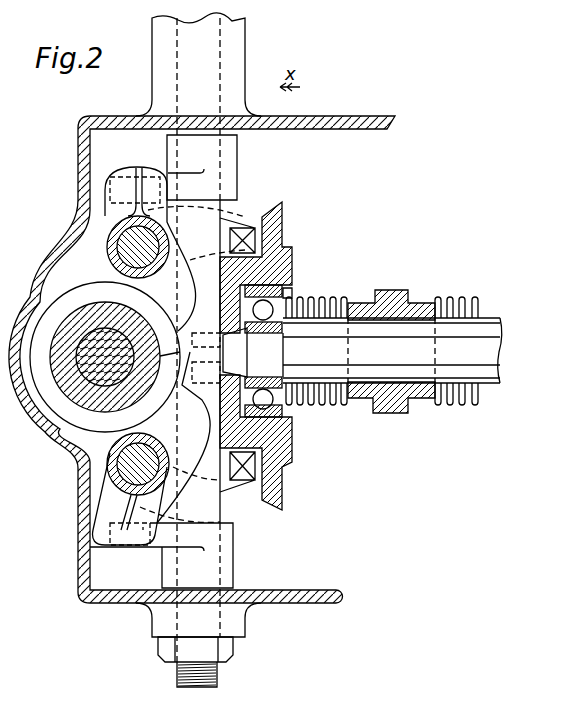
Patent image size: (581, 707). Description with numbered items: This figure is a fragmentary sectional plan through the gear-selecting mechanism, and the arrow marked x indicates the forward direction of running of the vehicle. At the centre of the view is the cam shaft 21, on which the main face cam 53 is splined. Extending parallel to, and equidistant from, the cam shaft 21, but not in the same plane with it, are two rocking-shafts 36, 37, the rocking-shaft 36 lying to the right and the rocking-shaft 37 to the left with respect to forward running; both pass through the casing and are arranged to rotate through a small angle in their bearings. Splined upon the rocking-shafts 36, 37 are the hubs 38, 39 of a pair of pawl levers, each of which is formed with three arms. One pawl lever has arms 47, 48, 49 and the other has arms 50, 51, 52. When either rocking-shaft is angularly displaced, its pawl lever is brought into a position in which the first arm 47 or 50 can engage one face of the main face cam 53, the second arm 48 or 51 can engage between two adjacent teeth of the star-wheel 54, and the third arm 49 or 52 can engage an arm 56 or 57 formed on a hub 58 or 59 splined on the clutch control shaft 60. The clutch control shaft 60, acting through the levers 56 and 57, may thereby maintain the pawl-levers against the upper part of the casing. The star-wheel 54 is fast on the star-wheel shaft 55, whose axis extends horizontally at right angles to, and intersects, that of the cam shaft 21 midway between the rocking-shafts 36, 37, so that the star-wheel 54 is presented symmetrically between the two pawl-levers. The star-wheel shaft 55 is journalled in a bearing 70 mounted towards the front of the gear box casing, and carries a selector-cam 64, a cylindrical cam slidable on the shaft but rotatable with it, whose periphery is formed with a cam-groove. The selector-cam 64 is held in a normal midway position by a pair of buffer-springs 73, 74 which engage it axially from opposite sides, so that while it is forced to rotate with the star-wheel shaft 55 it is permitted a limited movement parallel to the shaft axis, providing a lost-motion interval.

The cam shaft 21 is at (83, 400).
The rocking-shaft 36 is at (130, 250).
The rocking-shaft 37 is at (135, 462).
The hub 38 is at (112, 216).
The hub 39 is at (130, 497).
The pawl-lever arm 47 is at (187, 290).
The pawl-lever arm 48 is at (255, 205).
The pawl-lever arm 49 is at (155, 185).
The pawl-lever arm 50 is at (197, 437).
The pawl-lever arm 51 is at (240, 493).
The pawl-lever arm 52 is at (143, 527).
The main face cam 53 is at (72, 300).
The star-wheel 54 is at (290, 248).
The star-wheel shaft 55 is at (325, 330).
The arm 56 is at (122, 183).
The arm 57 is at (100, 547).
The hub 58 is at (227, 148).
The hub 59 is at (225, 527).
The clutch control shaft 60 is at (232, 218).
The selector-cam 64 is at (378, 407).
The bearing 70 is at (268, 405).
The buffer-spring 73 is at (318, 296).
The buffer-spring 74 is at (450, 296).